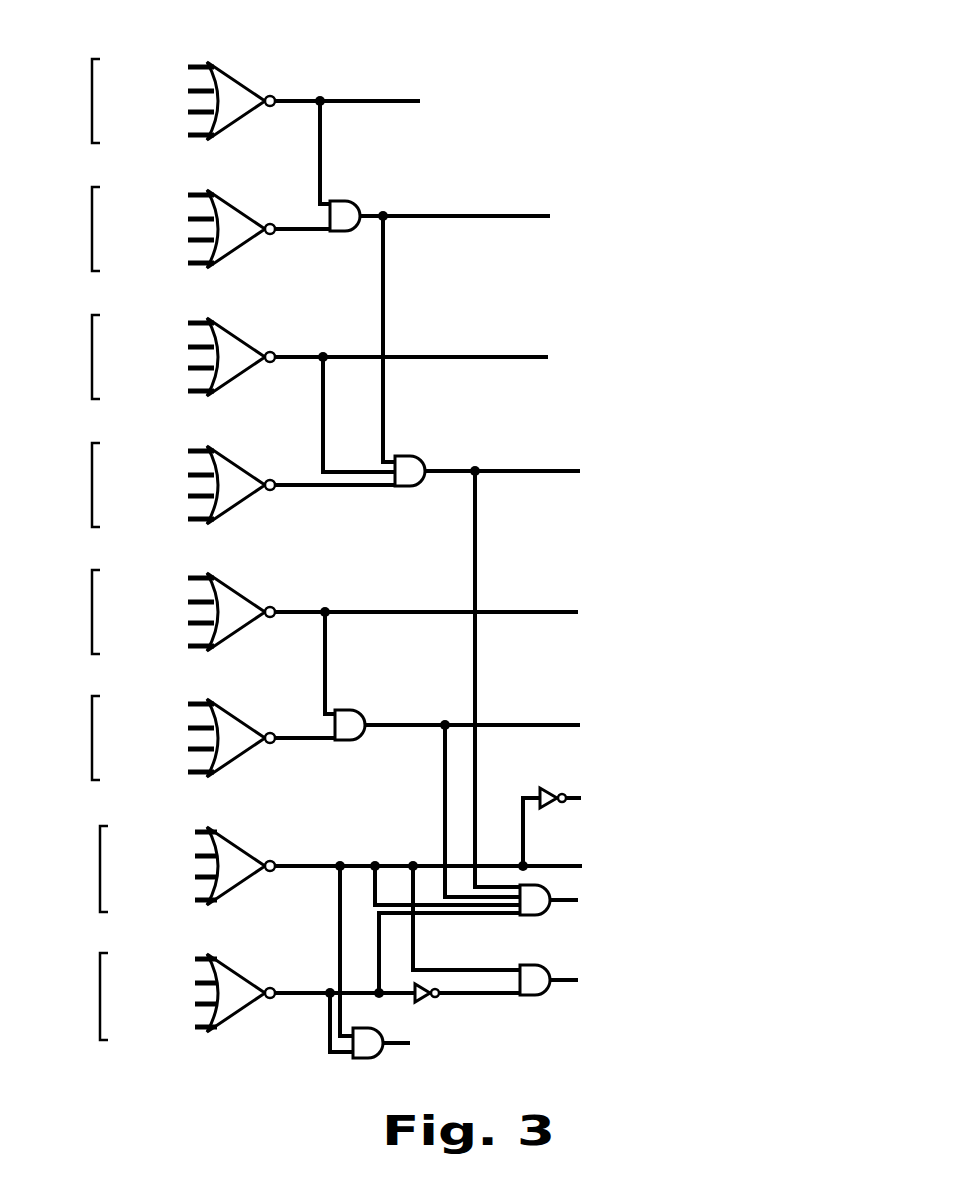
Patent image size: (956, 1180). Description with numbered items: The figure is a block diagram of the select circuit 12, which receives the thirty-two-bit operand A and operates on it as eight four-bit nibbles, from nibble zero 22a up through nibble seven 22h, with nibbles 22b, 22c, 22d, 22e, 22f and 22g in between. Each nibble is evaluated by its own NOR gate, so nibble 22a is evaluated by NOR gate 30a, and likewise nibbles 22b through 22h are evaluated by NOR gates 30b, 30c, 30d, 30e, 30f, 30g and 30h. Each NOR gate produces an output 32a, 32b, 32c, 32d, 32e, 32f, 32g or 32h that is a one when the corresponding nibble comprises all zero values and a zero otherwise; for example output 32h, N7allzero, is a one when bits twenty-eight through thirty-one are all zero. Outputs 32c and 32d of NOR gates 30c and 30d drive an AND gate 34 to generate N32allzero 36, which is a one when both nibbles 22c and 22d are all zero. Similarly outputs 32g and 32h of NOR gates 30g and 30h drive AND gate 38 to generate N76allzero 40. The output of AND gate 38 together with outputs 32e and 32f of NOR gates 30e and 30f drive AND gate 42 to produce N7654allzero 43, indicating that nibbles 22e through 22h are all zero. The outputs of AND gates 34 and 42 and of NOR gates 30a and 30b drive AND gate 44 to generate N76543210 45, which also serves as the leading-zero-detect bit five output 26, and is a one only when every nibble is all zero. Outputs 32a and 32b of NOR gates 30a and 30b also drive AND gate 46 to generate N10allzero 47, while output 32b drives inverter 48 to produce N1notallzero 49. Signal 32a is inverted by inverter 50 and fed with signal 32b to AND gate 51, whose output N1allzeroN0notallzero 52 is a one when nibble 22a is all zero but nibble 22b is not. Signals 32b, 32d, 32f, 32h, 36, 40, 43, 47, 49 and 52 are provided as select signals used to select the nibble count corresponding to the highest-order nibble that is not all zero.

The select circuit 12 is at (712, 68).
The nibble 0 22a is at (100, 995).
The nibble 1 22b is at (100, 868).
The nibble 2 22c is at (92, 740).
The nibble 3 22d is at (92, 614).
The nibble 4 22e is at (92, 487).
The nibble 5 22f is at (92, 359).
The nibble 6 22g is at (92, 231).
The nibble 7 22h is at (92, 103).
The NOR gate 30a is at (232, 974).
The NOR gate 30b is at (232, 847).
The NOR gate 30c is at (232, 719).
The NOR gate 30d is at (232, 593).
The NOR gate 30e is at (232, 466).
The NOR gate 30f is at (232, 338).
The NOR gate 30g is at (232, 210).
The NOR gate 30h is at (232, 82).
The NOR gate output 32a is at (307, 998).
The N1allzero output 32b is at (347, 840).
The NOR gate output 32c is at (298, 742).
The N3allzero output 32d is at (342, 586).
The NOR gate output 32e is at (340, 488).
The N5allzero output 32f is at (325, 332).
The NOR gate output 32g is at (303, 233).
The N7allzero output 32h is at (345, 73).
The AND gate 34 is at (355, 710).
The N32allzero output 36 is at (648, 715).
The AND gate 38 is at (350, 205).
The N76allzero output 40 is at (620, 207).
The AND gate 42 is at (415, 458).
The N7654allzero output 43 is at (620, 462).
The AND gate 44 is at (540, 918).
The N76543210 output 45 is at (722, 878).
The LZD 5 26 is at (650, 922).
The AND gate 46 is at (372, 1060).
The N10allzero output 47 is at (498, 1056).
The inverter 48 is at (548, 790).
The N1notallzero output 49 is at (675, 800).
The inverter 50 is at (425, 1000).
The AND gate 51 is at (540, 997).
The N1allzeroN0notallzero output 52 is at (725, 985).